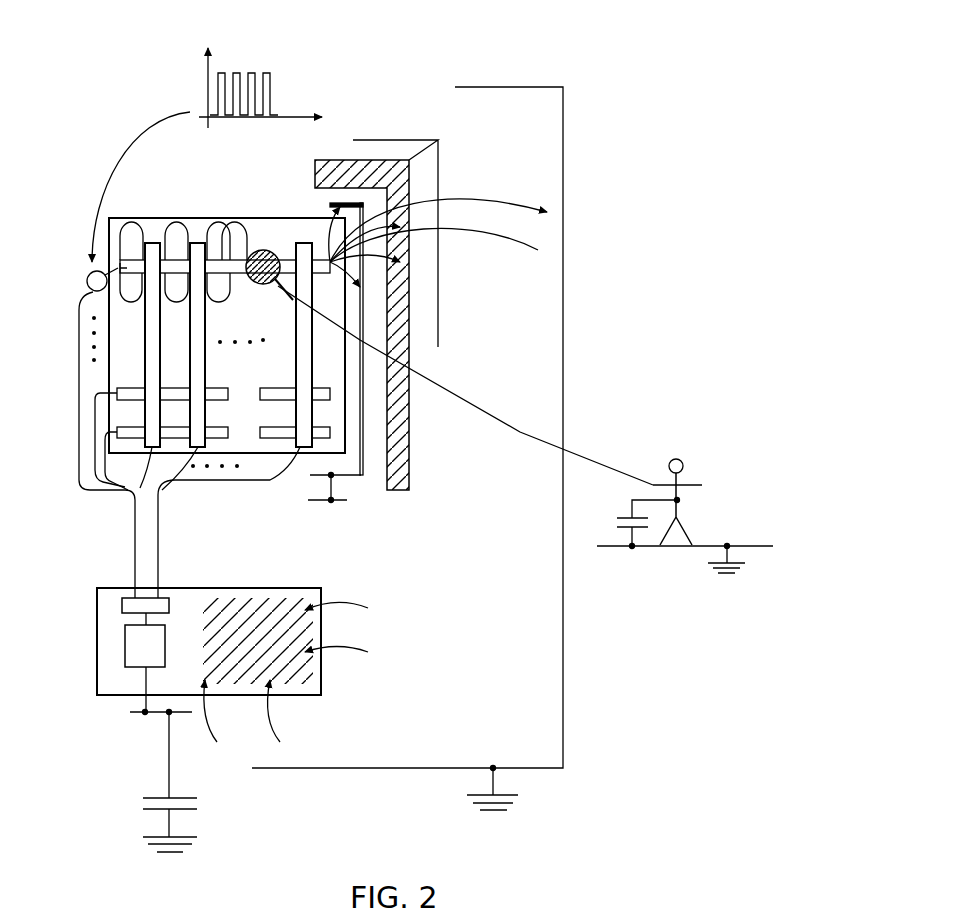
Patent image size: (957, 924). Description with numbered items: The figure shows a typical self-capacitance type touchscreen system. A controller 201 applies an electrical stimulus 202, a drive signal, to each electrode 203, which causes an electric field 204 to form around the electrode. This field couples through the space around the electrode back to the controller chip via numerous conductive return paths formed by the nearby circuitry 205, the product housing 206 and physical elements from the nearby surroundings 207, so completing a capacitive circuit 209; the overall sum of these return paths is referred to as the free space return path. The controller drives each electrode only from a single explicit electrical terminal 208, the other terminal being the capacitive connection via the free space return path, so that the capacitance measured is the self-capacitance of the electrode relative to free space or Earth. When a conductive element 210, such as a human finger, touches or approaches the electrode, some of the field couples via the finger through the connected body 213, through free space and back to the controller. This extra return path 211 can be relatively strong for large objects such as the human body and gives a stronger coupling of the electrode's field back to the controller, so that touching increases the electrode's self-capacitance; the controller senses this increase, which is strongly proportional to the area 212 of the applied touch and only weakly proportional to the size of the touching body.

The controller 201 is at (125, 647).
The electrical stimulus 202 is at (265, 53).
The electrode 203 is at (218, 317).
The electric field 204 is at (133, 222).
The nearby circuitry 205 is at (357, 203).
The product housing 206 is at (433, 182).
The physical elements from the nearby surroundings 207 is at (545, 388).
The single explicit electrical terminal 208 is at (120, 278).
The capacitive circuit 209 is at (353, 645).
The conductive element 210 is at (283, 286).
The extra return path 211 is at (623, 533).
The area of the applied touch 212 is at (252, 284).
The connected body 213 is at (688, 478).